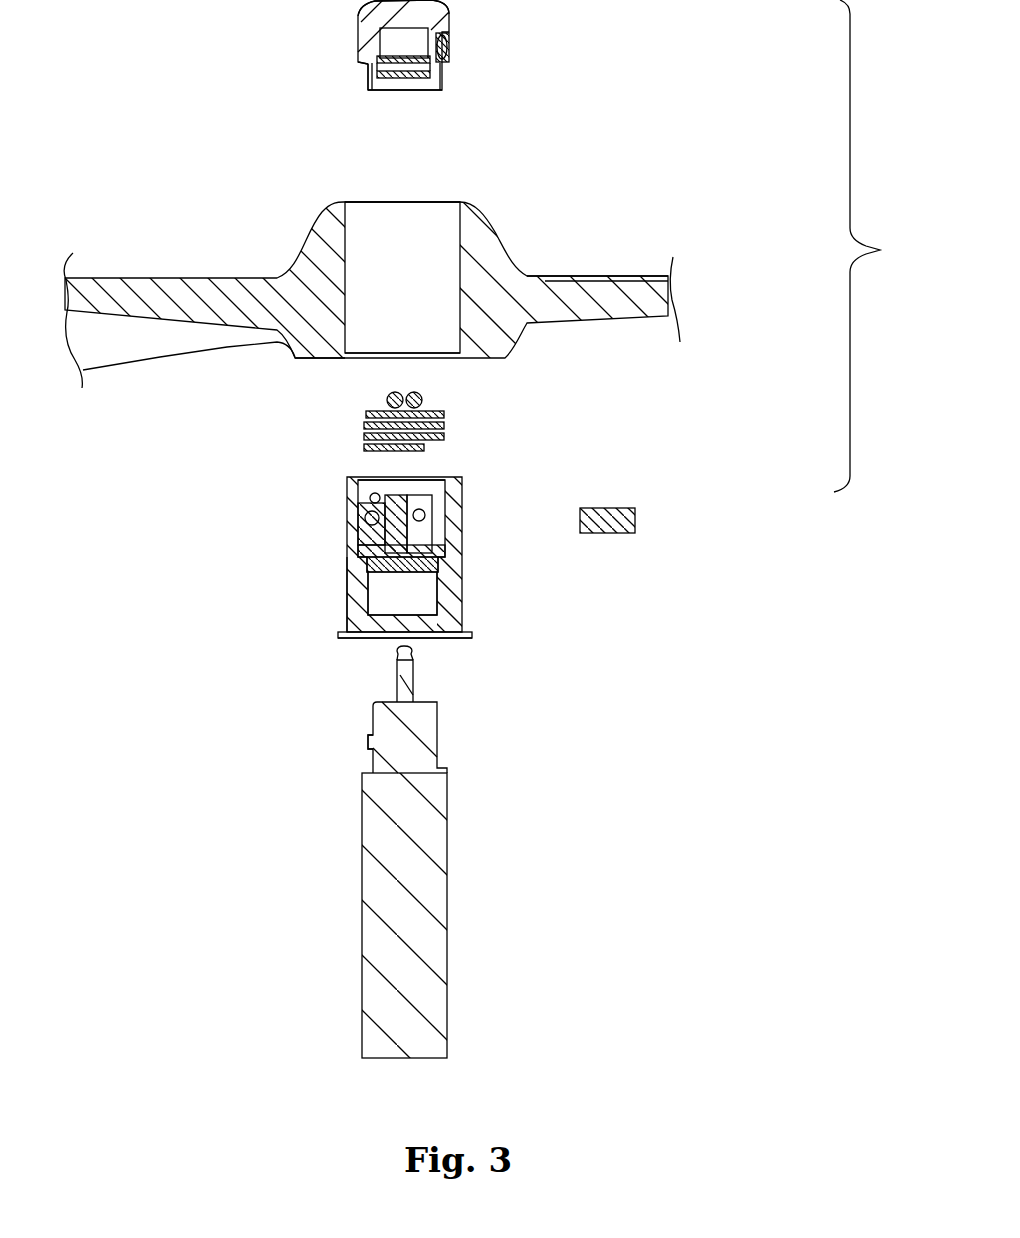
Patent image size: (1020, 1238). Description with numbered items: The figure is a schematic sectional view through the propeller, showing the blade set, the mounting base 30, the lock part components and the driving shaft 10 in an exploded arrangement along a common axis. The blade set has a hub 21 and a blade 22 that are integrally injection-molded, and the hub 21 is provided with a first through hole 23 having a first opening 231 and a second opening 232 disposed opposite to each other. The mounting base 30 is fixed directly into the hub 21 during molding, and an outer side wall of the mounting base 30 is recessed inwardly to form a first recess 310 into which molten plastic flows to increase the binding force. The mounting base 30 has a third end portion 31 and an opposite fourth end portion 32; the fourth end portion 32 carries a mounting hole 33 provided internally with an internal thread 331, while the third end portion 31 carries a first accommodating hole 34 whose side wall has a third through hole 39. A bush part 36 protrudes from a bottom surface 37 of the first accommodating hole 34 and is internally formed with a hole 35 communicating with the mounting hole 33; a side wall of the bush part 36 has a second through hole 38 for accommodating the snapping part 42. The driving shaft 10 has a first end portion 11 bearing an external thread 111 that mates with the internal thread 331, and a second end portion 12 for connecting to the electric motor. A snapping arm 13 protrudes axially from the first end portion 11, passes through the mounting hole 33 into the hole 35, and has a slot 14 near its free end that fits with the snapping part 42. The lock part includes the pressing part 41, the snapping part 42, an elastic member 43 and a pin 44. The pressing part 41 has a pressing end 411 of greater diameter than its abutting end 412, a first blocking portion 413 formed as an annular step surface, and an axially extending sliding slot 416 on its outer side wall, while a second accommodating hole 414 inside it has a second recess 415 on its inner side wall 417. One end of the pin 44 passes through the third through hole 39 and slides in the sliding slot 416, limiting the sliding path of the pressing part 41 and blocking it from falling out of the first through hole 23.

The driving shaft 10 is at (401, 852).
The first end portion 11 is at (406, 738).
The external thread 111 is at (366, 742).
The second end portion 12 is at (427, 1000).
The snapping arm 13 is at (414, 686).
The slot 14 is at (413, 657).
The hub 21 is at (485, 237).
The blade 22 is at (618, 278).
The first through hole 23 is at (498, 357).
The first opening 231 is at (352, 362).
The second opening 232 is at (413, 203).
The mounting base 30 is at (408, 573).
The third end portion 31 is at (348, 489).
The first recess 310 is at (356, 596).
The fourth end portion 32 is at (350, 621).
The internal thread 331 is at (368, 642).
The mounting hole 33 is at (410, 587).
The first accommodating hole 34 is at (402, 492).
The hole 35 is at (456, 560).
The bush part 36 is at (362, 541).
The bottom surface 37 is at (396, 548).
The second through hole 38 is at (440, 506).
The third through hole 39 is at (358, 525).
The pressing part 41 is at (514, 80).
The pressing end 411 is at (366, 18).
The abutting end 412 is at (396, 90).
The first blocking portion 413 is at (380, 72).
The second accommodating hole 414 is at (447, 58).
The second recess 415 is at (447, 86).
The sliding slot 416 is at (443, 38).
The inner side wall 417 is at (376, 52).
The snapping part 42 is at (426, 402).
The elastic member 43 is at (448, 433).
The pin 44 is at (636, 520).